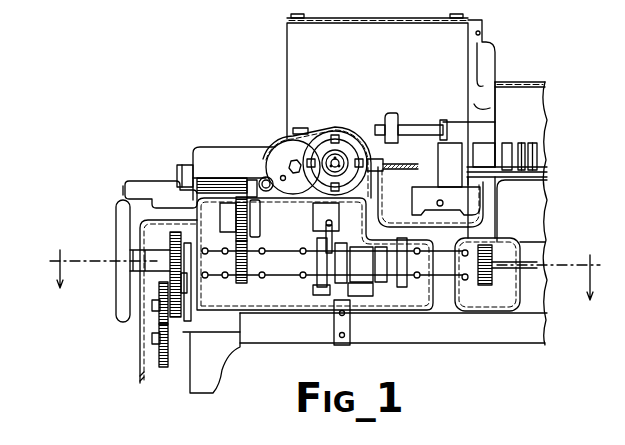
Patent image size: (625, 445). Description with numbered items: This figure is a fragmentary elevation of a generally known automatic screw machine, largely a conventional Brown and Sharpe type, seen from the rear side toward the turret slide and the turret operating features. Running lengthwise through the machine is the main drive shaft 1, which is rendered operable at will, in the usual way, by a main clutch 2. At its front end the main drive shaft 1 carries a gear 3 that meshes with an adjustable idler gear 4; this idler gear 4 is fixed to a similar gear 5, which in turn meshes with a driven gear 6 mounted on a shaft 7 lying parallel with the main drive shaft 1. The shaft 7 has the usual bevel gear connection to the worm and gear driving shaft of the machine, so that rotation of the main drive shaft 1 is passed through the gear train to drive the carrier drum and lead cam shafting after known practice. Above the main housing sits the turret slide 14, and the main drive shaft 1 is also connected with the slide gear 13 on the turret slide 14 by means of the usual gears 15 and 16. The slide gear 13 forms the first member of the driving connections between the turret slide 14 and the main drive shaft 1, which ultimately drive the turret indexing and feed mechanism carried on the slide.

The main drive shaft 1 is at (520, 263).
The main clutch 2 is at (320, 280).
The gear 3 is at (170, 241).
The adjustable idler gear 4 is at (186, 312).
The gear 5 is at (163, 318).
The driven gear 6 is at (165, 366).
The shaft 7 is at (160, 343).
The slide gear 13 is at (222, 178).
The turret slide 14 is at (251, 160).
The gear 15 is at (247, 279).
The gear 16 is at (247, 217).